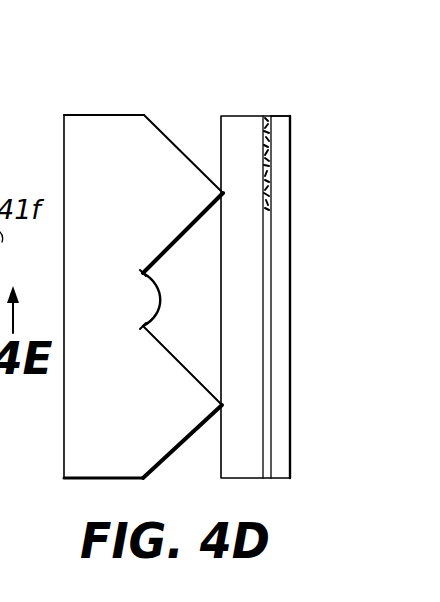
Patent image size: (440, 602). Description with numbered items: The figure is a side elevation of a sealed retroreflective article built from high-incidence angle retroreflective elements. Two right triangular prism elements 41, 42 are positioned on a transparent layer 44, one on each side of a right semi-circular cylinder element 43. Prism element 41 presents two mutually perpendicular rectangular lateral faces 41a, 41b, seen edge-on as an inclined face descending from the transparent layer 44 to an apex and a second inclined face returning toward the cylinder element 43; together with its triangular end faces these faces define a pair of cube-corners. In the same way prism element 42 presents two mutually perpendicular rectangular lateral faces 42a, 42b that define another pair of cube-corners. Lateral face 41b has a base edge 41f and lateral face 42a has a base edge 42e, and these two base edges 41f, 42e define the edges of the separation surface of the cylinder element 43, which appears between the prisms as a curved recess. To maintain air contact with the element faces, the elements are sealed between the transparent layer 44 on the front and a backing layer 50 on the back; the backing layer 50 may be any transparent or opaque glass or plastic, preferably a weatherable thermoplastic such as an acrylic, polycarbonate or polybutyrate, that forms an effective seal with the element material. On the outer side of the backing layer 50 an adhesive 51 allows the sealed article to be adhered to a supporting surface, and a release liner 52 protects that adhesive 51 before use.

The right triangular prism element 41 is at (183, 154).
The rectangular lateral face 41a is at (181, 151).
The rectangular lateral face 41b is at (190, 228).
The base edge 41f is at (142, 273).
The right triangular prism element 42 is at (153, 415).
The rectangular lateral face 42a is at (182, 364).
The rectangular lateral face 42b is at (196, 434).
The base edge 42e is at (141, 326).
The right semi-circular cylinder element 43 is at (147, 297).
The transparent layer 44 is at (132, 269).
The backing layer 50 is at (267, 252).
The adhesive 51 is at (268, 117).
The release liner 52 is at (282, 117).